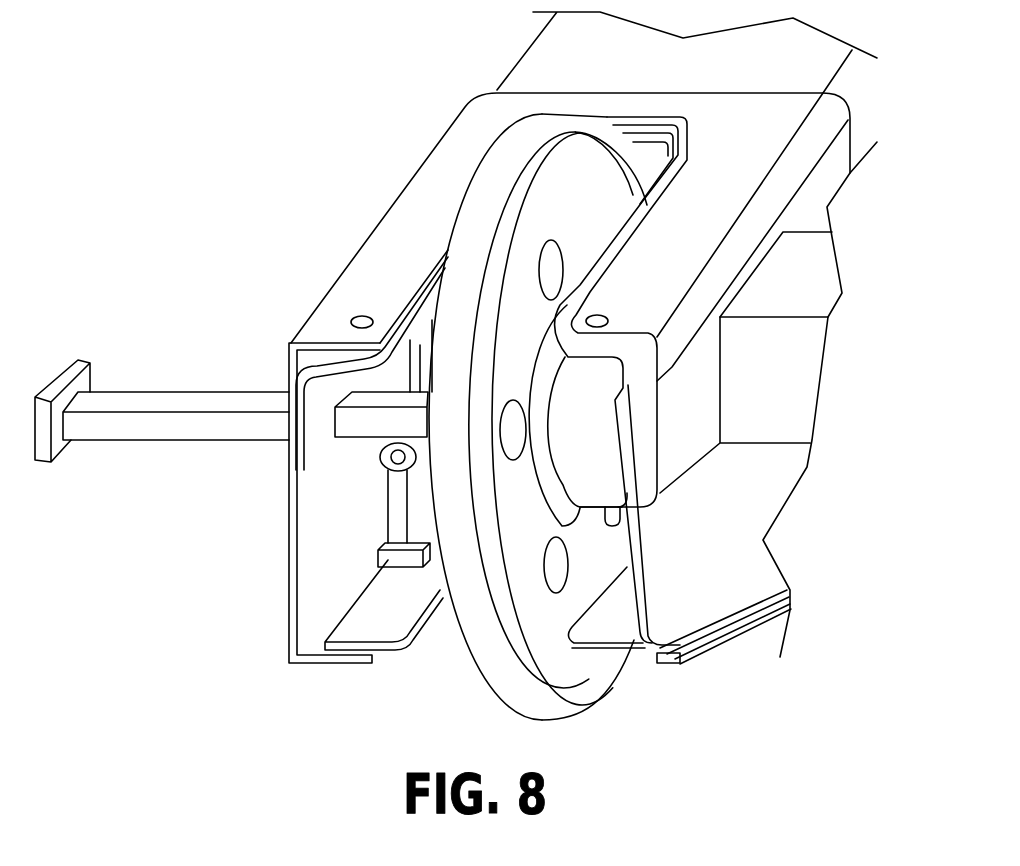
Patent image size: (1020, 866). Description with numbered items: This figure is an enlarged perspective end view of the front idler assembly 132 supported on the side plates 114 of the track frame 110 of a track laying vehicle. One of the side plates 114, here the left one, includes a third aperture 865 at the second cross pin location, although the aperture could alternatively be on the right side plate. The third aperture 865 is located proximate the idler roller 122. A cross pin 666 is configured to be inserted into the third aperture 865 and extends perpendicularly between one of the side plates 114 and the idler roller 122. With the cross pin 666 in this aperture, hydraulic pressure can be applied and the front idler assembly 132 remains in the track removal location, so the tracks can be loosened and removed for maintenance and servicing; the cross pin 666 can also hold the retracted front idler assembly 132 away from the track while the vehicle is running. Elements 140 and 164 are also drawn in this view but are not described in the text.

The track frame 110 is at (755, 643).
The side plates 114 is at (293, 547).
The idler roller 122 is at (518, 150).
The front idler assembly 132 is at (427, 580).
The fastener 140 is at (402, 490).
The bracket 164 is at (300, 440).
The cross pin 666 is at (183, 425).
The third aperture 865 is at (344, 408).